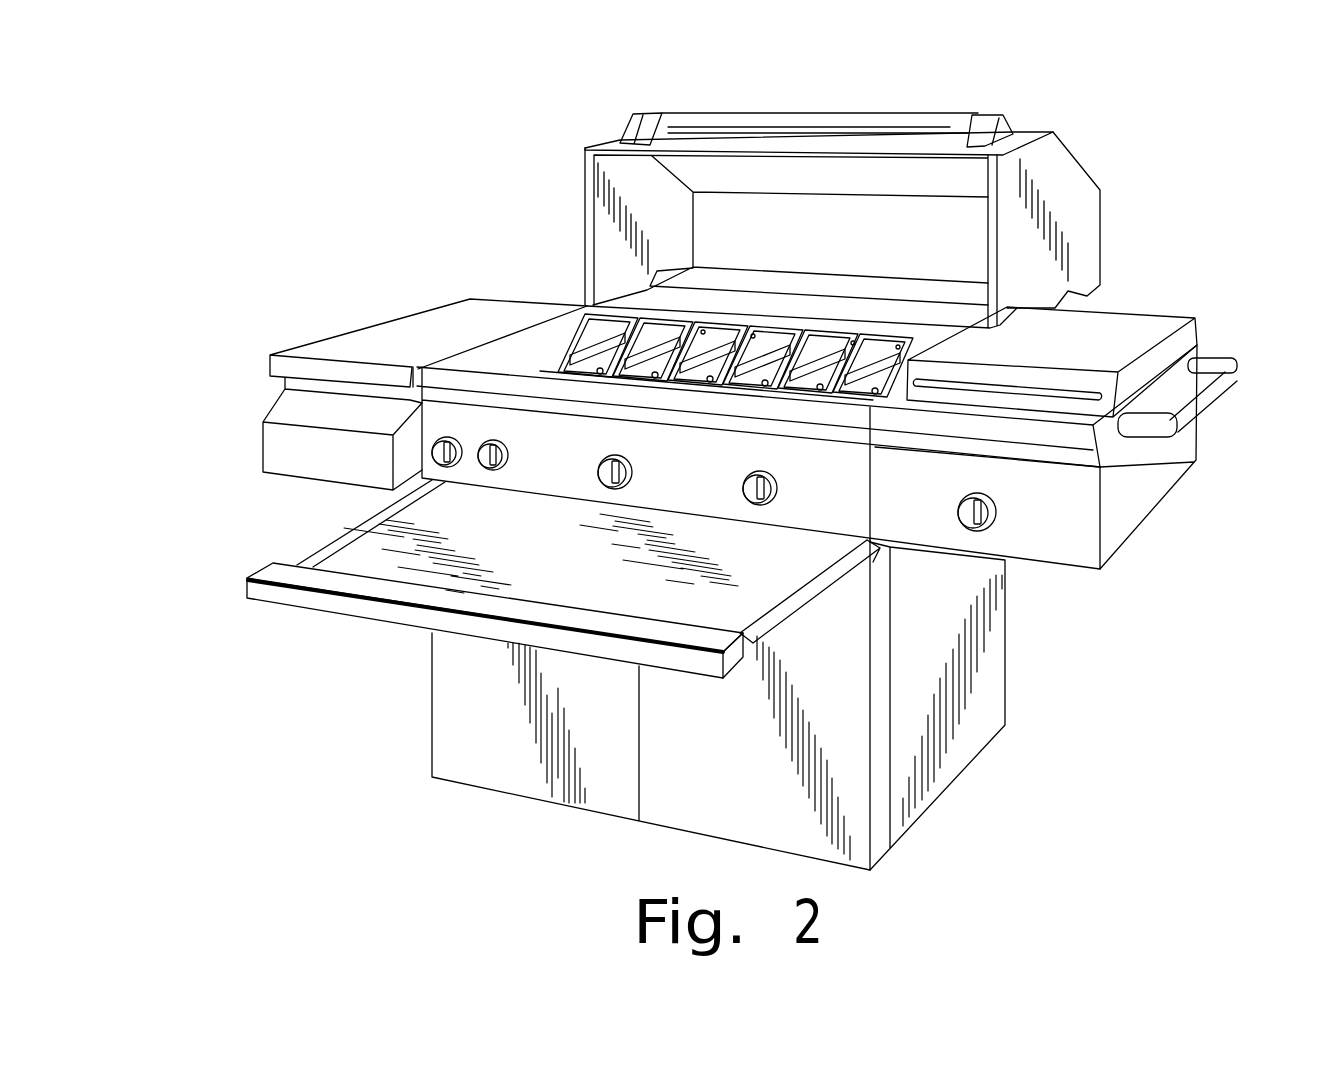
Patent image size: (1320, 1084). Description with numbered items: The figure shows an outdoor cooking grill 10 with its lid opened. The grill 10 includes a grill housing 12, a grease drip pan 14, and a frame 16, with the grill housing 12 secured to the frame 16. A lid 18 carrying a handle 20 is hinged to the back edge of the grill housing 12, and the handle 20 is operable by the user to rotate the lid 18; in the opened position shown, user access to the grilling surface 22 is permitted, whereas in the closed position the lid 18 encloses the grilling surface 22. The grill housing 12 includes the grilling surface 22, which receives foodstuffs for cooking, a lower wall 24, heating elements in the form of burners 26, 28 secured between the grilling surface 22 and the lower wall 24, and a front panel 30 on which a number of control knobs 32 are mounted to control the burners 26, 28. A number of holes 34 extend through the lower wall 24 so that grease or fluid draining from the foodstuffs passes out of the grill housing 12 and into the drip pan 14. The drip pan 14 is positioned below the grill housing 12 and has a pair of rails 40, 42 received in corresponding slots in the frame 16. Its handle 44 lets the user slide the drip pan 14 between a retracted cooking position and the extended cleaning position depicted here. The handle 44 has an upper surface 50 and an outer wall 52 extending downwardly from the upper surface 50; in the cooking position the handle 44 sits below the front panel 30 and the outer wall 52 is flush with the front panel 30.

The outdoor cooking grill 10 is at (1193, 174).
The grill housing 12 is at (570, 276).
The grease drip pan 14 is at (213, 560).
The frame 16 is at (1022, 718).
The lid 18 is at (1070, 166).
The handle 20 is at (880, 130).
The grilling surface 22 is at (487, 345).
The lower wall 24 is at (775, 365).
The burner 26 is at (582, 350).
The burner 28 is at (878, 380).
The front panel 30 is at (860, 494).
The control knobs 32 is at (748, 473).
The holes 34 is at (768, 380).
The rail 40 is at (320, 542).
The rail 42 is at (800, 594).
The handle 44 is at (358, 627).
The upper surface 50 is at (313, 582).
The outer wall 52 is at (398, 614).